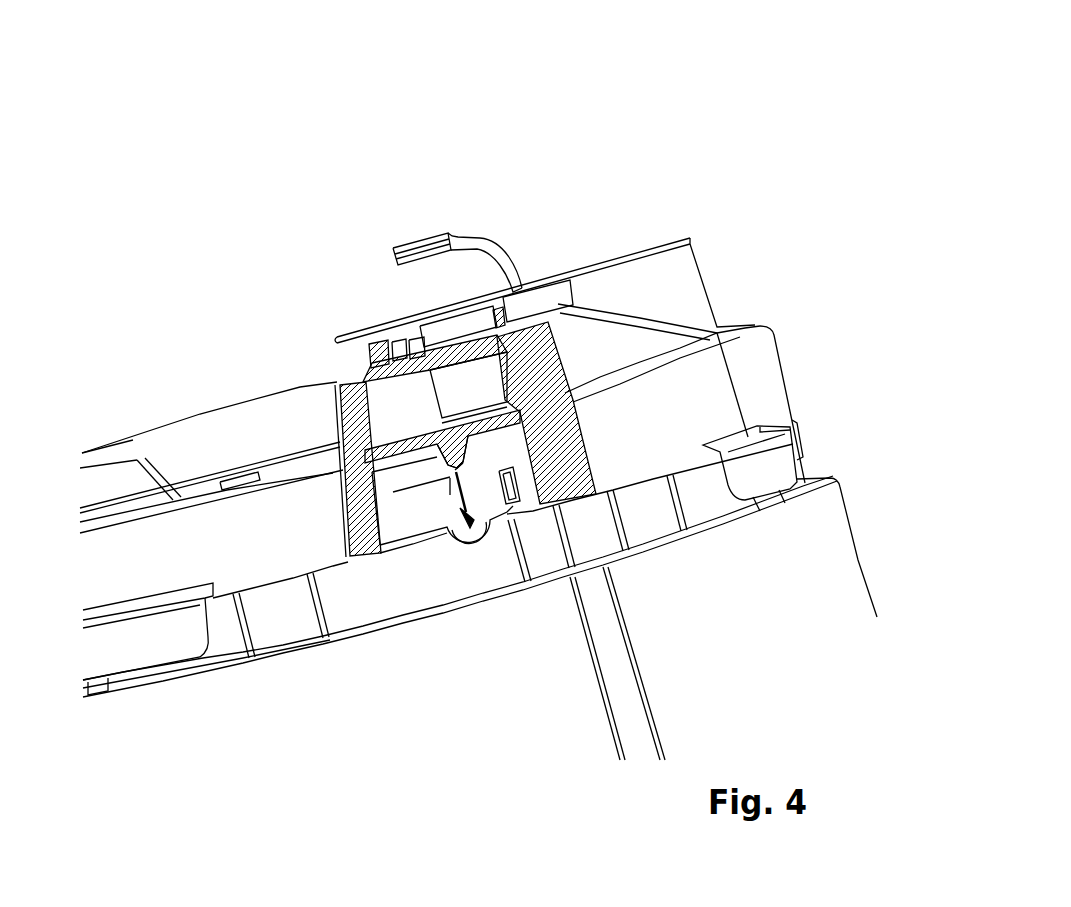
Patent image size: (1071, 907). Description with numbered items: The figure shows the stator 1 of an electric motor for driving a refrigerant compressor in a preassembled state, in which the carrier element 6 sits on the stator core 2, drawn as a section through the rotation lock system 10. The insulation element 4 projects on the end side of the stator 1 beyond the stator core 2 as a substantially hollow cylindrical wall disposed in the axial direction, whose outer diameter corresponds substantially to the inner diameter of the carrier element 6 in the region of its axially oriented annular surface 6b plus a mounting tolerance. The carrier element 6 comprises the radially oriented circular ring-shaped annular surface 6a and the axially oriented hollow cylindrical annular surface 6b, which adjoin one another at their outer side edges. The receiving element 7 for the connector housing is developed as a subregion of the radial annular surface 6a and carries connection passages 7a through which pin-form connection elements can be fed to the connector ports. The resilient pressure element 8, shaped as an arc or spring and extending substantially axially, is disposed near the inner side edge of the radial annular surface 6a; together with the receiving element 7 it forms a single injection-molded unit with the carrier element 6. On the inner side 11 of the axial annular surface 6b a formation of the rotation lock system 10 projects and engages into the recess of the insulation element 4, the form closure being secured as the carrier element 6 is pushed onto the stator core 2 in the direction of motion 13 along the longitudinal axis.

The stator 1 is at (765, 108).
The stator core 2 is at (798, 583).
The insulation element 4 is at (277, 620).
The carrier element 6 is at (763, 323).
The radially oriented annular surface 6a is at (120, 512).
The axially oriented annular surface 6b is at (773, 388).
The receiving element 7 is at (680, 280).
The connection passages 7a is at (390, 334).
The resilient pressure element 8 is at (417, 247).
The rotation lock system 10 is at (450, 465).
The inner side 11 is at (527, 477).
The direction of motion 13 is at (463, 477).